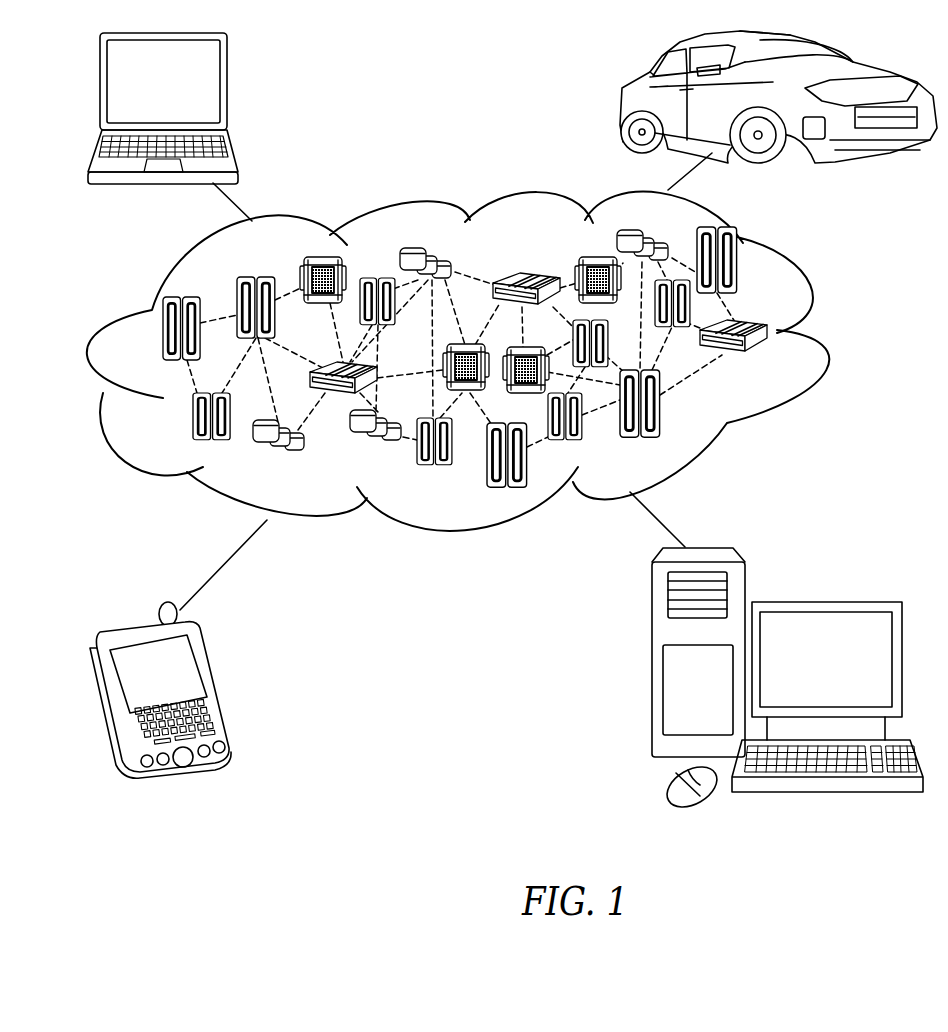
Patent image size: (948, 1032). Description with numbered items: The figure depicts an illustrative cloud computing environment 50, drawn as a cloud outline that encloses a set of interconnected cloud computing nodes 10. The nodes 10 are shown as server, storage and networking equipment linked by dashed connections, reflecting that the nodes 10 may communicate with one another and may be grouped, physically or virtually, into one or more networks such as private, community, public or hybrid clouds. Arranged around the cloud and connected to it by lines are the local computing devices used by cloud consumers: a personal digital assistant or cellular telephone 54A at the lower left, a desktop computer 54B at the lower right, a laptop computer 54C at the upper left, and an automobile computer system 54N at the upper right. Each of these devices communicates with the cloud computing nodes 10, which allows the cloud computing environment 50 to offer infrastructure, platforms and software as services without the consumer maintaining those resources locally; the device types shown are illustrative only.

The cloud computing nodes 10 is at (770, 365).
The cloud computing environment 50 is at (827, 341).
The personal digital assistant or cellular telephone 54A is at (217, 684).
The desktop computer 54B is at (825, 602).
The laptop computer 54C is at (227, 89).
The automobile computer system 54N is at (622, 102).